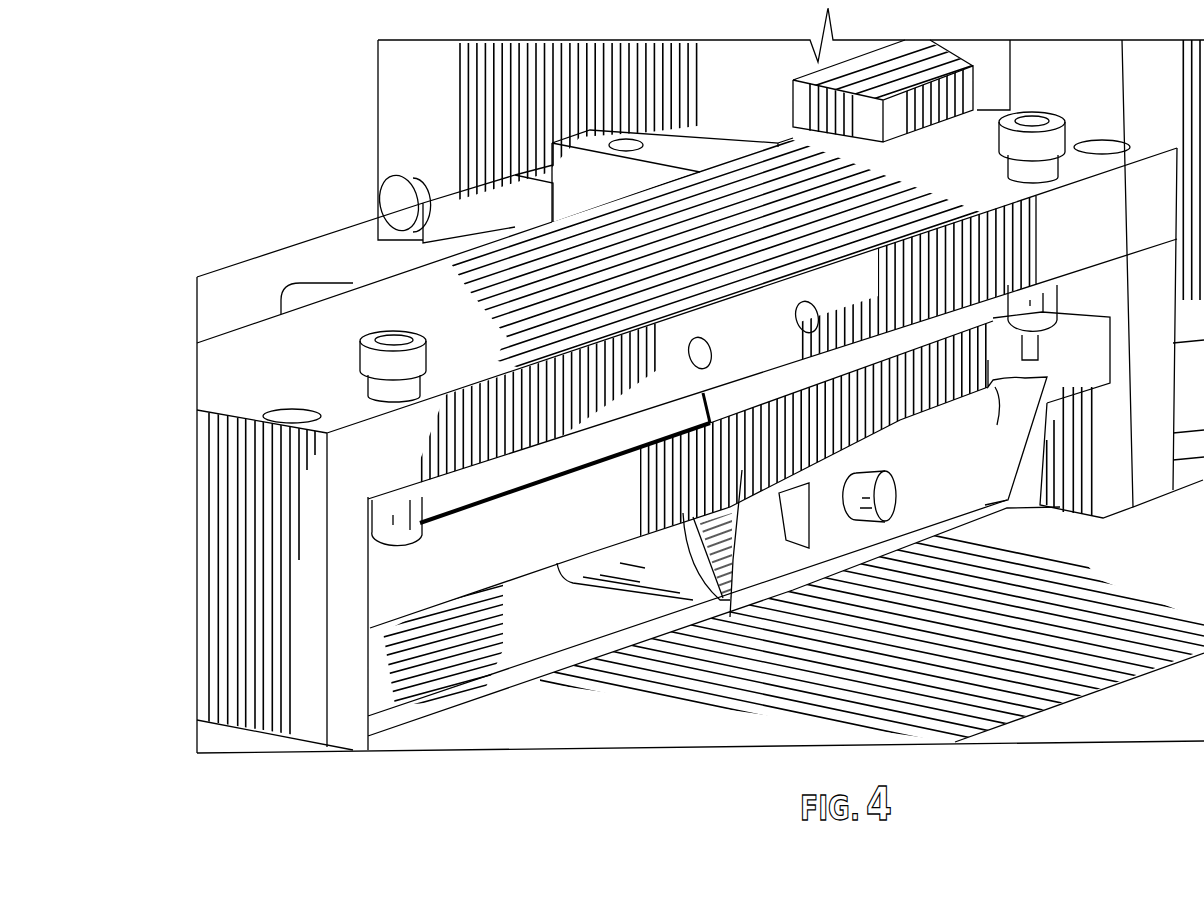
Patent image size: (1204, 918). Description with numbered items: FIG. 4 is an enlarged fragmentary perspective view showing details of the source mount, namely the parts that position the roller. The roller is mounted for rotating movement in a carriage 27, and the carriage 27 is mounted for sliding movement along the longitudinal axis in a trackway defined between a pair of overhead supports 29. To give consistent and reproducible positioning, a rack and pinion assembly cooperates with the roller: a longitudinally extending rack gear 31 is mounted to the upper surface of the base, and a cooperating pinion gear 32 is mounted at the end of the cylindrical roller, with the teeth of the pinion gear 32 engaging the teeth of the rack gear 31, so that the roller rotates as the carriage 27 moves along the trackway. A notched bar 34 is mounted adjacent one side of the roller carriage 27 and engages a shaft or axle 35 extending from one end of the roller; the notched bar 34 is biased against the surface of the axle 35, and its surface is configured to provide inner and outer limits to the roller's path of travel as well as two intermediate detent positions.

The carriage 27 is at (353, 280).
The overhead support 29 is at (685, 269).
The rack gear 31 is at (403, 717).
The pinion gear 32 is at (730, 617).
The notched bar 34 is at (1014, 432).
The axle 35 is at (890, 500).